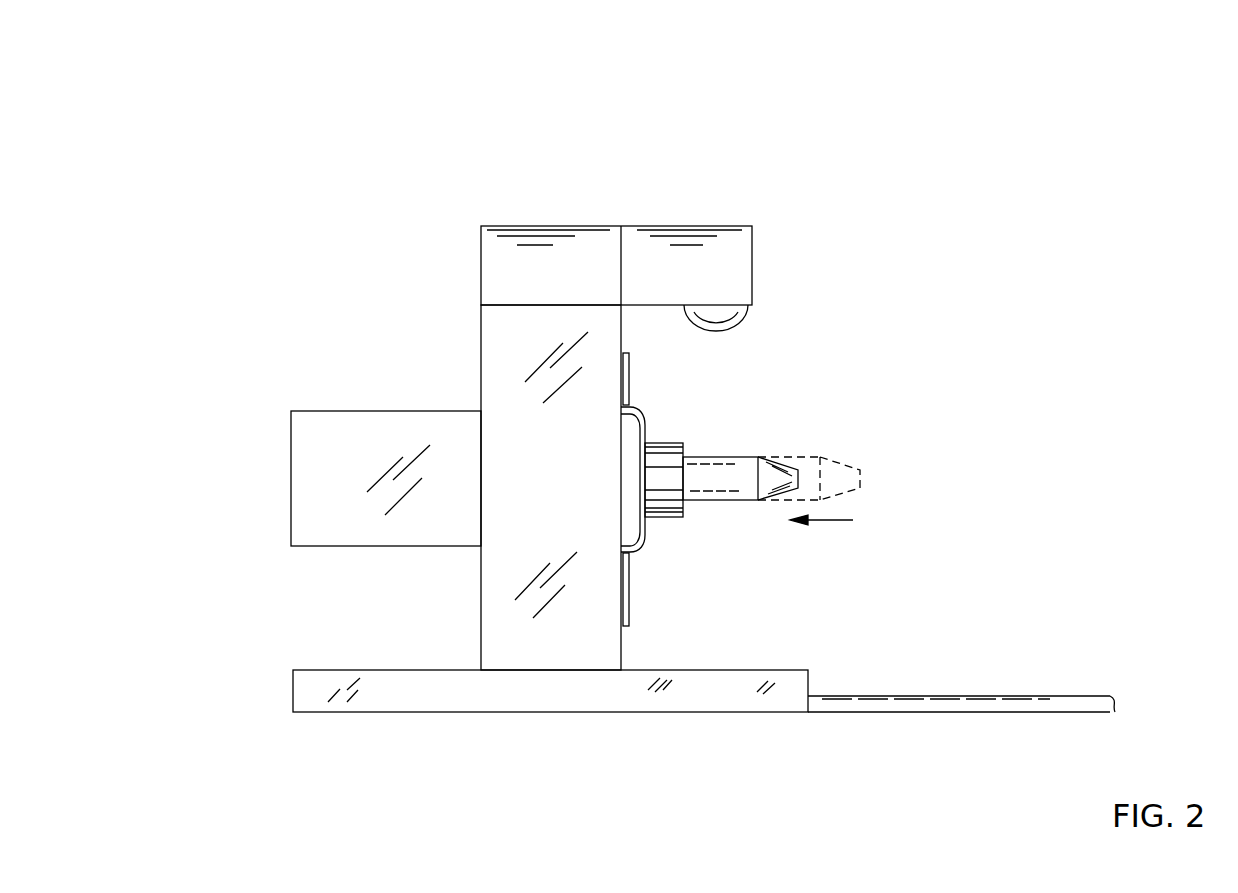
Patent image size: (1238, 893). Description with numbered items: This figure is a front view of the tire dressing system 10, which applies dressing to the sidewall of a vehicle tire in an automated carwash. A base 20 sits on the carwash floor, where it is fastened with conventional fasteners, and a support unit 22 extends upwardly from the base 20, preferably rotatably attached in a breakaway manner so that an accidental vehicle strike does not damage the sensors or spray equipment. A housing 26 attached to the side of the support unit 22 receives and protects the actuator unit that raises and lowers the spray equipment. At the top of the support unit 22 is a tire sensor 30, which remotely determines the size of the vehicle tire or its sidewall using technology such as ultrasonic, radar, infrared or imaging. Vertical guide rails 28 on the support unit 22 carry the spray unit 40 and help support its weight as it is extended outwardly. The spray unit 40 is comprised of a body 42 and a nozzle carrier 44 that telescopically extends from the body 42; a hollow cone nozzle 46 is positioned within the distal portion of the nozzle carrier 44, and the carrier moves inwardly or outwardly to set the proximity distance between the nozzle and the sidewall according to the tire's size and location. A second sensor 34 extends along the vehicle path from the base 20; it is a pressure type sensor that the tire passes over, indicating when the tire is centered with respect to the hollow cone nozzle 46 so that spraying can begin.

The tire dressing system 10 is at (235, 150).
The base 20 is at (323, 712).
The support unit 22 is at (481, 350).
The housing 26 is at (291, 446).
The vertical guide rails 28 is at (629, 378).
The tire sensor 30 is at (741, 316).
The second sensor 34 is at (902, 712).
The spray unit 40 is at (733, 535).
The body 42 is at (665, 517).
The nozzle carrier 44 is at (741, 457).
The hollow cone nozzle 46 is at (800, 478).